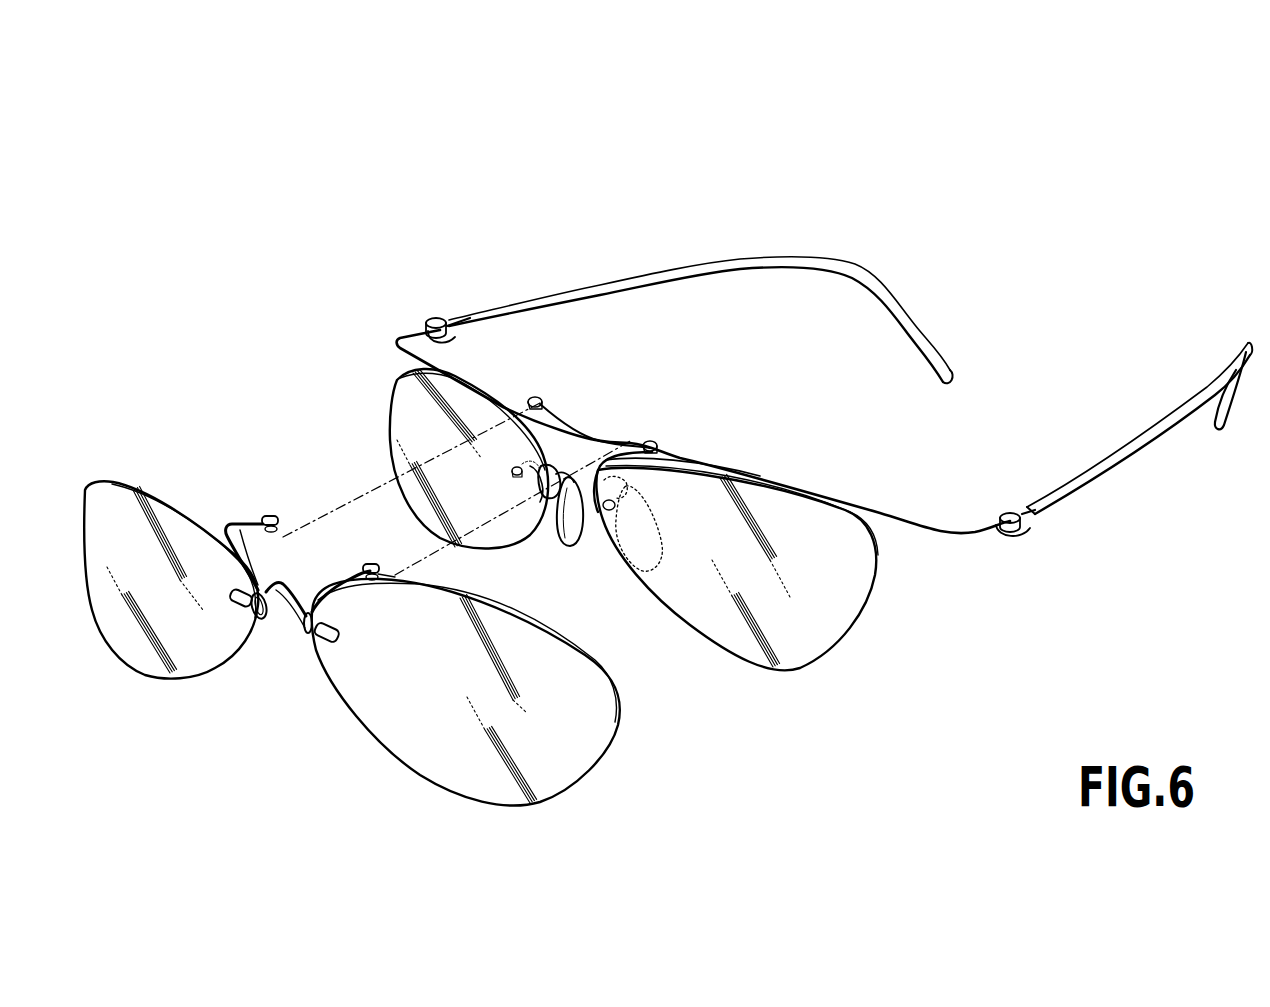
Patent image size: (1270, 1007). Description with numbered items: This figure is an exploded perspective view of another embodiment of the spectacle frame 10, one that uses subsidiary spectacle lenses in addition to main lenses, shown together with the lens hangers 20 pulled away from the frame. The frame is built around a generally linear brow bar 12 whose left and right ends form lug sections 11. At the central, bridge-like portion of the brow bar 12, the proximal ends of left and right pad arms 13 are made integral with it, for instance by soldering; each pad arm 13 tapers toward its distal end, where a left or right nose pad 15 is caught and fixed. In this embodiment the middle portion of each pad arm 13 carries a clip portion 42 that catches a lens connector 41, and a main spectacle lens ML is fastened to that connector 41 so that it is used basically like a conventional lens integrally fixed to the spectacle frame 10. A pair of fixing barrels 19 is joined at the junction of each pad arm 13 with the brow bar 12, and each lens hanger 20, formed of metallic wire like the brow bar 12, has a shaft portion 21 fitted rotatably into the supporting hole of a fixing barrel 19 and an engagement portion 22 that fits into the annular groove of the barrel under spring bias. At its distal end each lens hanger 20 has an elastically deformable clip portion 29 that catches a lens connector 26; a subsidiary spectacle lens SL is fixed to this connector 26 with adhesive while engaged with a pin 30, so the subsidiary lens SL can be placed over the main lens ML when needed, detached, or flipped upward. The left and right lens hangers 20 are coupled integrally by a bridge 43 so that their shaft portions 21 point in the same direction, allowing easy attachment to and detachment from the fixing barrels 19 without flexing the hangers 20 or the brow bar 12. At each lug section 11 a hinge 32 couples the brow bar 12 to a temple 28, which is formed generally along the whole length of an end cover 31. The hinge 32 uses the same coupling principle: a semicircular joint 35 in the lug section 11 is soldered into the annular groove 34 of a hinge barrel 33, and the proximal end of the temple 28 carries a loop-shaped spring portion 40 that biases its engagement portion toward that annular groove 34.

The spectacle frame 10 is at (547, 124).
The lug section 11 is at (946, 538).
The brow bar 12 is at (588, 437).
The pad arm 13 is at (622, 460).
The nose pad 15 is at (572, 546).
The fixing barrel 19 is at (542, 399).
The lens hanger 20 is at (240, 523).
The shaft portion 21 is at (272, 532).
The engagement portion 22 is at (276, 516).
The lens connector 26 is at (545, 490).
The temple 28 is at (450, 327).
The clip portion 29 is at (548, 500).
The pin 30 is at (512, 468).
The end cover 31 is at (872, 270).
The hinge 32 is at (1016, 476).
The hinge barrel 33 is at (1003, 516).
The annular groove 34 is at (422, 321).
The semicircular joint 35 is at (1028, 530).
The spring portion 40 is at (458, 334).
The lens connector 41 is at (234, 596).
The clip portion 42 is at (259, 621).
The bridge 43 is at (298, 594).
The main spectacle lens ML is at (402, 395).
The subsidiary spectacle lens SL is at (130, 650).